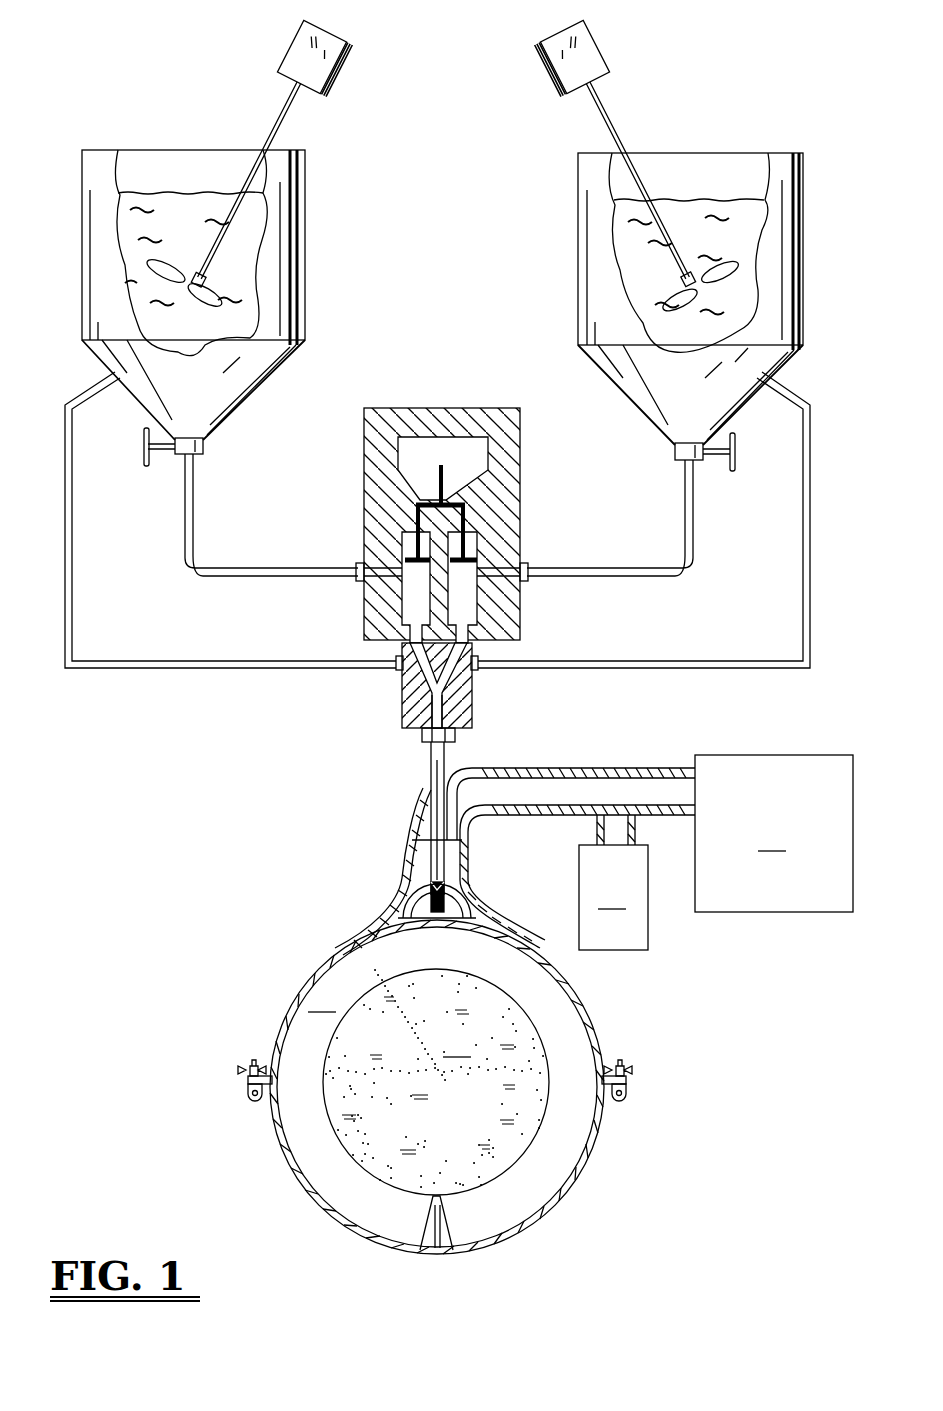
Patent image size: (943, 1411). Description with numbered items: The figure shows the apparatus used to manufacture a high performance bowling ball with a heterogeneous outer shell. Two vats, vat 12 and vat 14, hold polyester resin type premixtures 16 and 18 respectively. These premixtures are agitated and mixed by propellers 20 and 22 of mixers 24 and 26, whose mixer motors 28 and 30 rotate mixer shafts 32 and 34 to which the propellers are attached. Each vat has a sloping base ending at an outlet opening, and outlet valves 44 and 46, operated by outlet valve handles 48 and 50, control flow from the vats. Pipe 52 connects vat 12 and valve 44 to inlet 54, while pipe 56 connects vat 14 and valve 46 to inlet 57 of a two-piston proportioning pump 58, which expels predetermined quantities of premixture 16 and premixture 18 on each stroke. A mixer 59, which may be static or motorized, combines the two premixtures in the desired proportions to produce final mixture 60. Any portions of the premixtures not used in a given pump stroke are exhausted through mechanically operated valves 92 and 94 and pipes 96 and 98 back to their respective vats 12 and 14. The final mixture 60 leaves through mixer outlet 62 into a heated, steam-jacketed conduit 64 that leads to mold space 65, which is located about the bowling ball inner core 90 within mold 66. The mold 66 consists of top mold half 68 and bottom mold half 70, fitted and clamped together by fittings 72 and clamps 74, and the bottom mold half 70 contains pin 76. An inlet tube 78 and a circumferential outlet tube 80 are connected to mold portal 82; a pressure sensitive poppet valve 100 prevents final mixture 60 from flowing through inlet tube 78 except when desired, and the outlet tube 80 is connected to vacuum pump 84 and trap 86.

The vat 12 is at (306, 251).
The vat 14 is at (578, 251).
The polyester resin premixture 16 is at (168, 192).
The polyester resin premixture 18 is at (702, 197).
The propeller 20 is at (199, 297).
The propeller 22 is at (690, 297).
The mixer 24 is at (200, 71).
The mixer 26 is at (684, 78).
The mixer motor 28 is at (347, 66).
The mixer motor 30 is at (548, 68).
The mixer shaft 32 is at (292, 113).
The mixer shaft 34 is at (598, 114).
The outlet valve 44 is at (205, 446).
The outlet valve 46 is at (675, 452).
The outlet valve handle 48 is at (143, 446).
The outlet valve handle 50 is at (740, 452).
The pipe 52 is at (184, 543).
The inlet 54 is at (357, 582).
The pipe 56 is at (694, 543).
The inlet 57 is at (526, 582).
The two-piston proportioning pump 58 is at (522, 497).
The mixer 59 is at (474, 690).
The final mixture 60 is at (402, 706).
The mixer outlet 62 is at (457, 738).
The heated conduit 64 is at (430, 779).
The mold space 65 is at (322, 1001).
The mold 66 is at (668, 1151).
The top mold half 68 is at (316, 972).
The bottom mold half 70 is at (560, 1210).
The fitting 72 is at (242, 1090).
The clamp 74 is at (240, 1068).
The pin 76 is at (447, 1220).
The inlet tube 78 is at (436, 858).
The circumferential outlet tube 80 is at (453, 855).
The mold portal 82 is at (412, 905).
The vacuum pump 84 is at (774, 833).
The trap 86 is at (613, 897).
The bowling ball inner core 90 is at (436, 1082).
The mechanically operated valve 92 is at (478, 662).
The mechanically operated valve 94 is at (400, 672).
The pipe 96 is at (656, 661).
The pipe 98 is at (212, 661).
The pressure sensitive poppet valve 100 is at (446, 893).